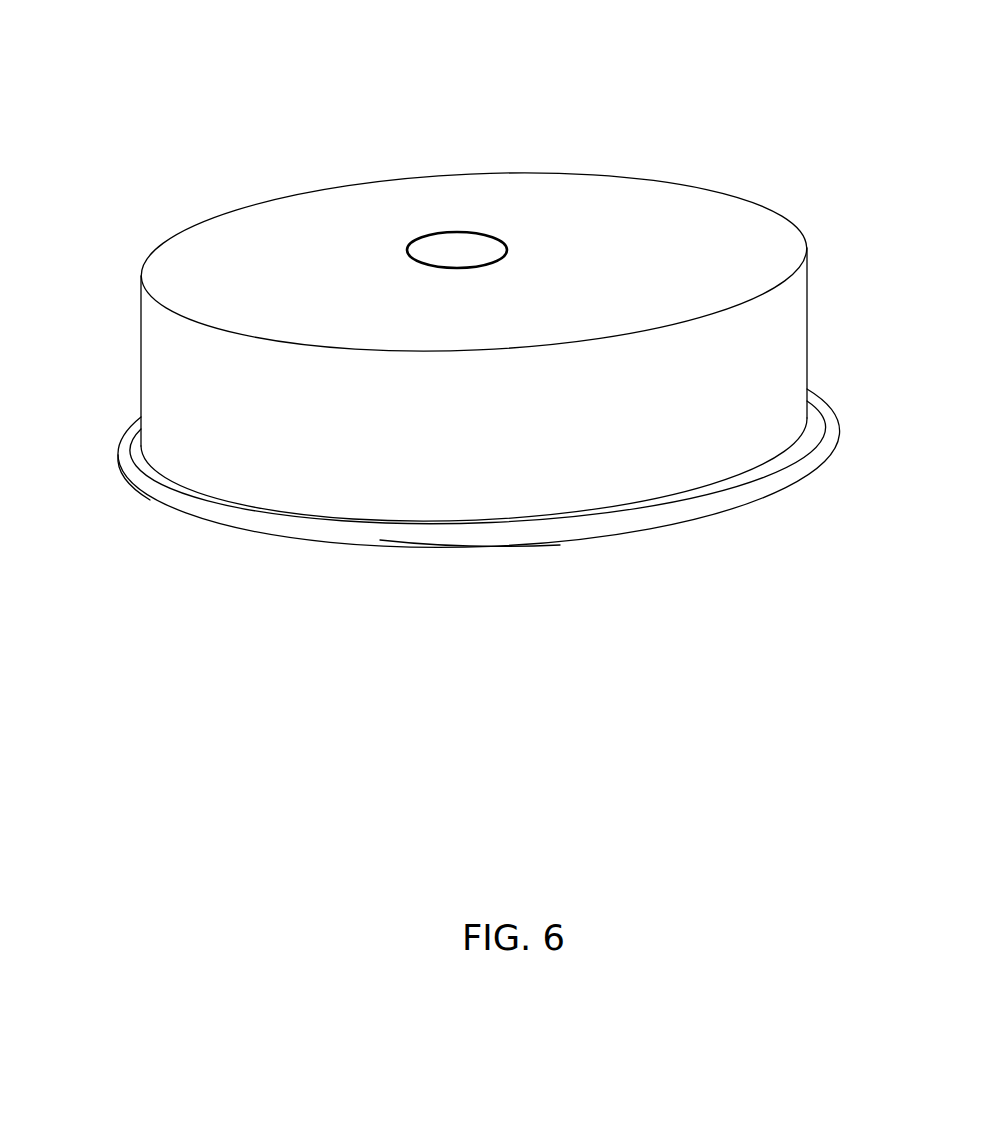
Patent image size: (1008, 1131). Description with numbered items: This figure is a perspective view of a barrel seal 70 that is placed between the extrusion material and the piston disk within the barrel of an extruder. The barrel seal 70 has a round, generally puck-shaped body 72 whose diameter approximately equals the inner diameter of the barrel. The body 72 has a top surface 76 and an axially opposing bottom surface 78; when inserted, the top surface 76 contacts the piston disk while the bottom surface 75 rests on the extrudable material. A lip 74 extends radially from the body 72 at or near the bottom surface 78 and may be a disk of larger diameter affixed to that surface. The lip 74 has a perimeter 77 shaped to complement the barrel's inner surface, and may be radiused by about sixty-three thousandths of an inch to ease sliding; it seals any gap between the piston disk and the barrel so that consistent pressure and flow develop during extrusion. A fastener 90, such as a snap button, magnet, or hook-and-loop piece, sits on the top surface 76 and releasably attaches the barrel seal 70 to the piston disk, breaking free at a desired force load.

The barrel seal 70 is at (459, 334).
The body 72 is at (791, 352).
The lip 74 is at (790, 477).
The bottom surface 75 is at (478, 555).
The top surface 76 is at (308, 227).
The perimeter 77 is at (143, 498).
The bottom surface 78 is at (147, 455).
The fastener 90 is at (480, 232).